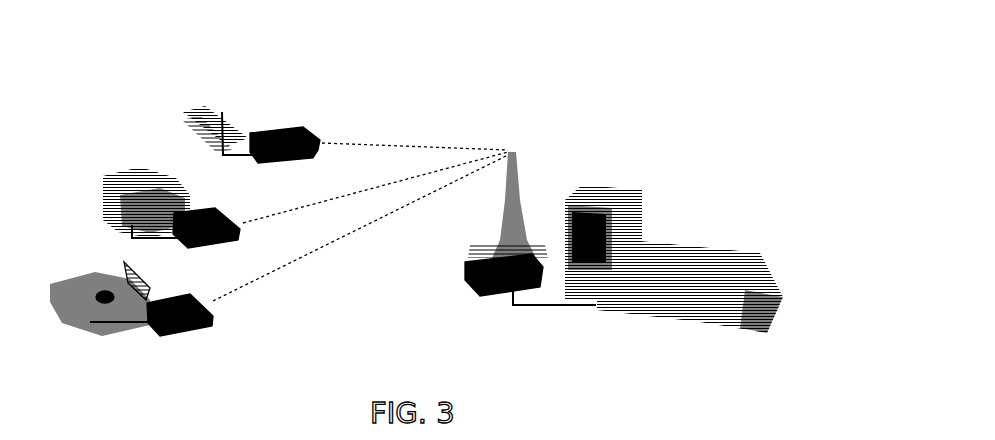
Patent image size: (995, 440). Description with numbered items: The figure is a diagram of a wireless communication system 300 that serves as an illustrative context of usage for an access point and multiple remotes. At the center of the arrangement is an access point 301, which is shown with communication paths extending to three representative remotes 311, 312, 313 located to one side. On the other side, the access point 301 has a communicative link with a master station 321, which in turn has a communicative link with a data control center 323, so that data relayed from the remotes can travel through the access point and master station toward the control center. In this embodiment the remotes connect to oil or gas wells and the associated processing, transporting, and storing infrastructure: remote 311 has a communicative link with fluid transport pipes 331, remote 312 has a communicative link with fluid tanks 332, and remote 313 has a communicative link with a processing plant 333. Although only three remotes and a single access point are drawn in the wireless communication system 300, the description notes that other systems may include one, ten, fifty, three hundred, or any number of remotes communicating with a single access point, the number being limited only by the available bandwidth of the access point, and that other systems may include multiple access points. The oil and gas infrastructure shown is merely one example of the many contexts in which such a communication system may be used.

The wireless communication system 300 is at (567, 53).
The access point 301 is at (520, 220).
The remote 311 is at (310, 132).
The remote 312 is at (203, 211).
The remote 313 is at (178, 296).
The master station 321 is at (482, 293).
The data control center 323 is at (697, 248).
The fluid transport pipes 331 is at (222, 112).
The fluid tanks 332 is at (121, 170).
The processing plant 333 is at (63, 280).